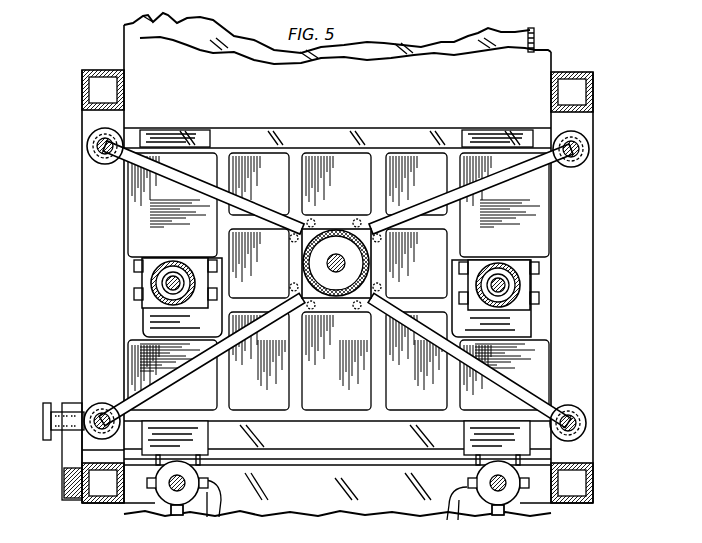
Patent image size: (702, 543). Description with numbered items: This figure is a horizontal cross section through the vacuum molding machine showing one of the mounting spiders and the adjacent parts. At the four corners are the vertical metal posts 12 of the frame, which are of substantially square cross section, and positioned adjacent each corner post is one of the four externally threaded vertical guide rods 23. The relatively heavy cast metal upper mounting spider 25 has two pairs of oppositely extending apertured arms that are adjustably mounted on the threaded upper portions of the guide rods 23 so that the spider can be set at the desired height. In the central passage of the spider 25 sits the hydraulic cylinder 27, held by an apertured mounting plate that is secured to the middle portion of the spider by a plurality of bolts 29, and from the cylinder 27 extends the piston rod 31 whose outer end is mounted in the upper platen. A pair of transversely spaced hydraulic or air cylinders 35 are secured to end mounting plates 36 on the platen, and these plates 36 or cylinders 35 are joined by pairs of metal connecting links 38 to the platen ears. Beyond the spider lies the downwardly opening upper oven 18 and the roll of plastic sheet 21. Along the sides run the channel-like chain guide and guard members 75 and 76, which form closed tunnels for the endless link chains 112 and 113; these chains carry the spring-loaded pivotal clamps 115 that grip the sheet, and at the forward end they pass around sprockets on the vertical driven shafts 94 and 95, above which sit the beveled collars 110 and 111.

The vertical corner post 12 is at (334, 278).
The upper oven 18 is at (353, 110).
The plastic sheet roll 21 is at (315, 507).
The guide rod 23 is at (331, 284).
The upper mounting spider 25 is at (338, 252).
The hydraulic cylinder 27 is at (313, 264).
The bolt 29 is at (321, 284).
The piston rod 31 is at (383, 258).
The hydraulic or air cylinder 35 is at (334, 284).
The end mounting plate 36 is at (334, 302).
The connecting link 38 is at (334, 287).
The chain guide and guard member 75 is at (116, 33).
The chain guide and guard member 76 is at (558, 41).
The vertical driven shaft 94 is at (171, 498).
The vertical driven shaft 95 is at (500, 499).
The beveled collar 110 is at (191, 524).
The beveled collar 111 is at (487, 520).
The endless link chain 112 is at (207, 455).
The endless link chain 113 is at (482, 455).
The pivotal clamp 115 is at (335, 511).